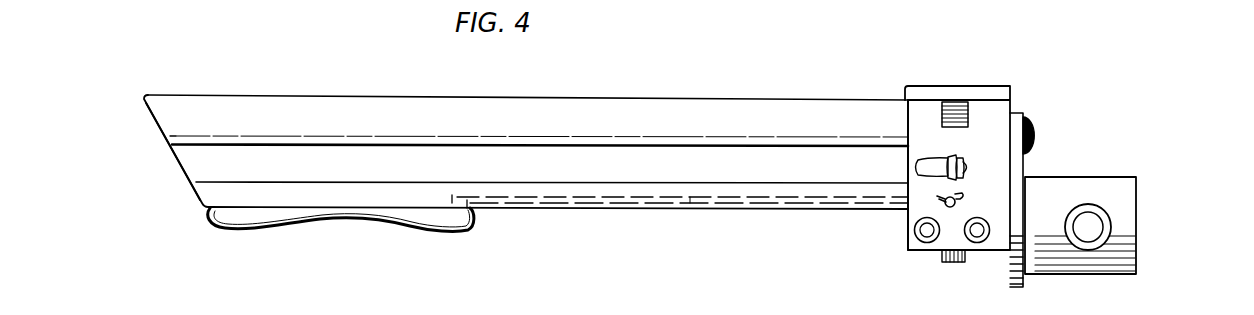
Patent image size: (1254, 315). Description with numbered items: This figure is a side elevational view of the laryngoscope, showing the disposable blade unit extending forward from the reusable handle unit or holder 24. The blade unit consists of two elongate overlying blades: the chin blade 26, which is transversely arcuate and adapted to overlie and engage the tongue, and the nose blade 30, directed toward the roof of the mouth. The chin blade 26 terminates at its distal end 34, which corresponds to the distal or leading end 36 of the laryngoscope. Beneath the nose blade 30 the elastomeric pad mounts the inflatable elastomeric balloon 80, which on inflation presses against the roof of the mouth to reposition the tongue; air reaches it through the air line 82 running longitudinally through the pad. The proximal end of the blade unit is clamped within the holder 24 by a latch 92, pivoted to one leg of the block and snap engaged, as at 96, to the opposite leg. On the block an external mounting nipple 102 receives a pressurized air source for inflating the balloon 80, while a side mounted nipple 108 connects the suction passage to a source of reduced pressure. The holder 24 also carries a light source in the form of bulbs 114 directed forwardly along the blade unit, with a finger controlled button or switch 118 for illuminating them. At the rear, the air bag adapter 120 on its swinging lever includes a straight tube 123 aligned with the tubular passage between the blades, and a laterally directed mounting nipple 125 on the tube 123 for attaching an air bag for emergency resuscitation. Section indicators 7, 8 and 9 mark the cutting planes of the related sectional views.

The handle unit or holder 24 is at (906, 124).
The chin blade 26 is at (590, 101).
The nose blade 30 is at (646, 216).
The distal end 34 is at (181, 168).
The distal or leading end 36 is at (157, 144).
The inflatable elastomeric balloon 80 is at (383, 222).
The air line or passage 82 is at (688, 199).
The latch 92 is at (1012, 84).
The snap engagement 96 is at (958, 127).
The external mounting nipple 102 is at (914, 230).
The side mounted nipple 108 is at (988, 208).
The bulbs 114 is at (916, 168).
The finger controlled button or switch 118 is at (942, 262).
The air bag adapter 120 is at (1139, 198).
The straight tube 123 is at (1094, 190).
The laterally directed mounting nipple 125 is at (1109, 229).
The section line 7- 7 is at (293, 55).
The section line 8- 8 is at (963, 50).
The section line 9- 9 is at (1008, 27).